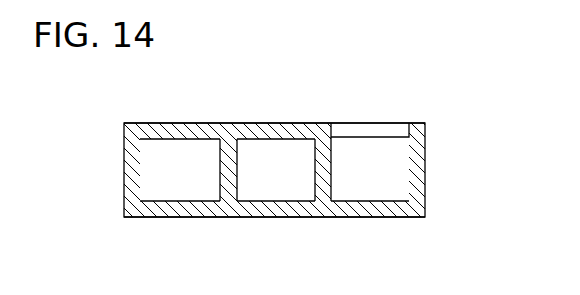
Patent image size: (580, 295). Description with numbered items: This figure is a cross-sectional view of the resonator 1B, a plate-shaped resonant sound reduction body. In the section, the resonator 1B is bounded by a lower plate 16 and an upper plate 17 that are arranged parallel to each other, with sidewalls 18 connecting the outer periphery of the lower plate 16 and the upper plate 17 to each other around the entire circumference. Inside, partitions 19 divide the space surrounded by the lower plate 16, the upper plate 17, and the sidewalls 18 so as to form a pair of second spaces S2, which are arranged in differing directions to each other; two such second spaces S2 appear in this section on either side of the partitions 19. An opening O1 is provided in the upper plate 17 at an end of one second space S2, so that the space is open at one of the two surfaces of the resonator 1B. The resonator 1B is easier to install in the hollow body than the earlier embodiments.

The resonator 1B is at (321, 160).
The lower plate 16 is at (266, 213).
The upper plate 17 is at (263, 124).
The sidewalls 18 is at (426, 183).
The partitions 19 is at (233, 167).
The opening O1 is at (330, 124).
The second space S2 is at (192, 181).